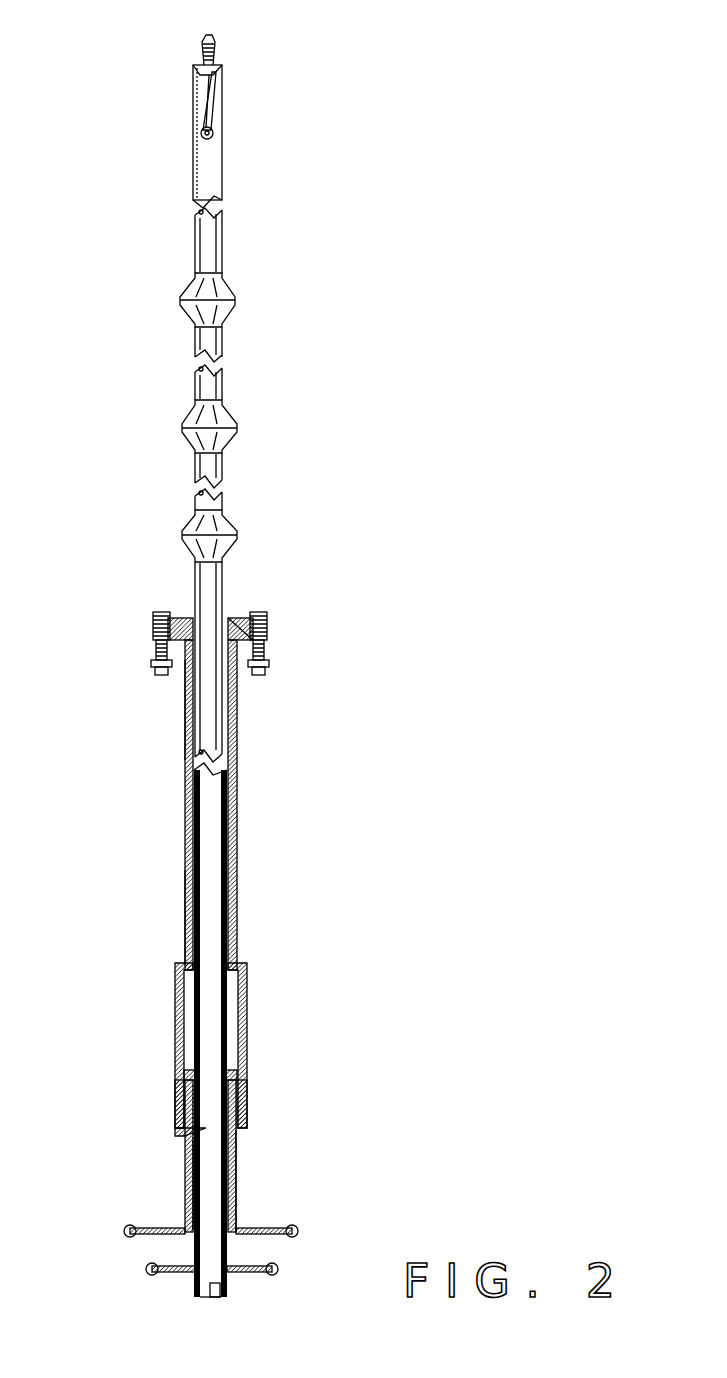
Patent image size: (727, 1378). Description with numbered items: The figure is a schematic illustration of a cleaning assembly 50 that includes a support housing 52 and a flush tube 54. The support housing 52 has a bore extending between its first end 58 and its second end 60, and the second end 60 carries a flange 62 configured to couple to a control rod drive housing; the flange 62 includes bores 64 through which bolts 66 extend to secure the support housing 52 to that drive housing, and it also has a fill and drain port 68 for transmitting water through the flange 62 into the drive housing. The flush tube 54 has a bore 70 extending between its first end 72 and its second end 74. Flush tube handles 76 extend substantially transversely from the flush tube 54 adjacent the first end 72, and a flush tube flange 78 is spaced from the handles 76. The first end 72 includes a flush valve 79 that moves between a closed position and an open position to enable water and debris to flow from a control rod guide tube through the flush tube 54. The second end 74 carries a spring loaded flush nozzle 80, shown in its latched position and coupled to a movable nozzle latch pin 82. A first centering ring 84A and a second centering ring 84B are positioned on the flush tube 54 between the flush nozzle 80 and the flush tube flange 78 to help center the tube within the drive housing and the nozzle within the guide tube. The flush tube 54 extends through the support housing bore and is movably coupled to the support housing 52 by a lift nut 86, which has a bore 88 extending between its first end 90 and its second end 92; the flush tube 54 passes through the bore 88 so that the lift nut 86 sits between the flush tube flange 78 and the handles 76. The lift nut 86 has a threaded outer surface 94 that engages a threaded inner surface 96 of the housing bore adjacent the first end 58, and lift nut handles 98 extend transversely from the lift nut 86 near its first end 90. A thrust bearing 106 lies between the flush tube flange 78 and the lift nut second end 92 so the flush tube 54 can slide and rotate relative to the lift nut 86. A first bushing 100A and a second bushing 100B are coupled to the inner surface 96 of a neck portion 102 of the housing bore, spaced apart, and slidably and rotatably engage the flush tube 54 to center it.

The cleaning assembly 50 is at (126, 159).
The support housing 52 is at (248, 965).
The flush tube 54 is at (224, 240).
The first end 58 is at (178, 1138).
The second end 60 is at (183, 608).
The flange 62 is at (165, 640).
The bores 64 is at (152, 628).
The bolts 66 is at (160, 673).
The fill and drain port 68 is at (258, 650).
The bore 70 is at (224, 1195).
The first end 72 is at (228, 1284).
The second end 74 is at (193, 115).
The flush tube handles 76 is at (280, 1262).
The flush tube flange 78 is at (238, 1050).
The flush valve 79 is at (215, 1298).
The flush nozzle 80 is at (232, 79).
The nozzle latch pin 82 is at (210, 35).
The first centering ring 84A is at (197, 292).
The second centering ring 84B is at (218, 525).
The lift nut 86 is at (240, 1165).
The bore 88 is at (196, 1193).
The first end 90 is at (244, 1225).
The second end 92 is at (252, 1082).
The threaded outer surface 94 is at (240, 1140).
The threaded inner surface 96 is at (205, 1125).
The lift nut handles 98 is at (288, 1236).
The first bushing 100A is at (186, 948).
The second bushing 100B is at (188, 692).
The neck portion 102 is at (240, 862).
The thrust bearing 106 is at (185, 1075).